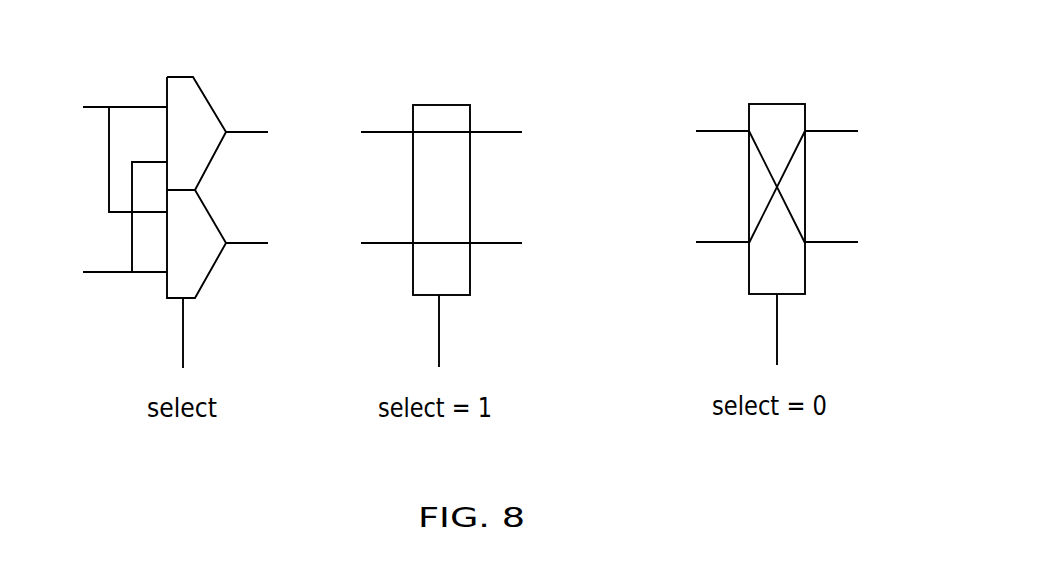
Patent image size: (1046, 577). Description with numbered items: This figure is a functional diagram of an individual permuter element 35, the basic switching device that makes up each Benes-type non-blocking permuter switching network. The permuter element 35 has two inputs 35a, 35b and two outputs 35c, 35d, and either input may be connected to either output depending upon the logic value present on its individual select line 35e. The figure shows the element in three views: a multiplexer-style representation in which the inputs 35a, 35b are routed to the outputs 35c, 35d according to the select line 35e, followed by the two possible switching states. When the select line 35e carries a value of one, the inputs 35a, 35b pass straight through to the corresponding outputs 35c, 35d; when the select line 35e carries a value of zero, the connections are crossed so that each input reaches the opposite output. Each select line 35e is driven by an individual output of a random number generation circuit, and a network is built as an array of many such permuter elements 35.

The permuter element 35 is at (184, 88).
The input 35a is at (93, 107).
The input 35b is at (93, 273).
The output 35c is at (253, 132).
The output 35d is at (253, 243).
The select line 35e is at (184, 325).